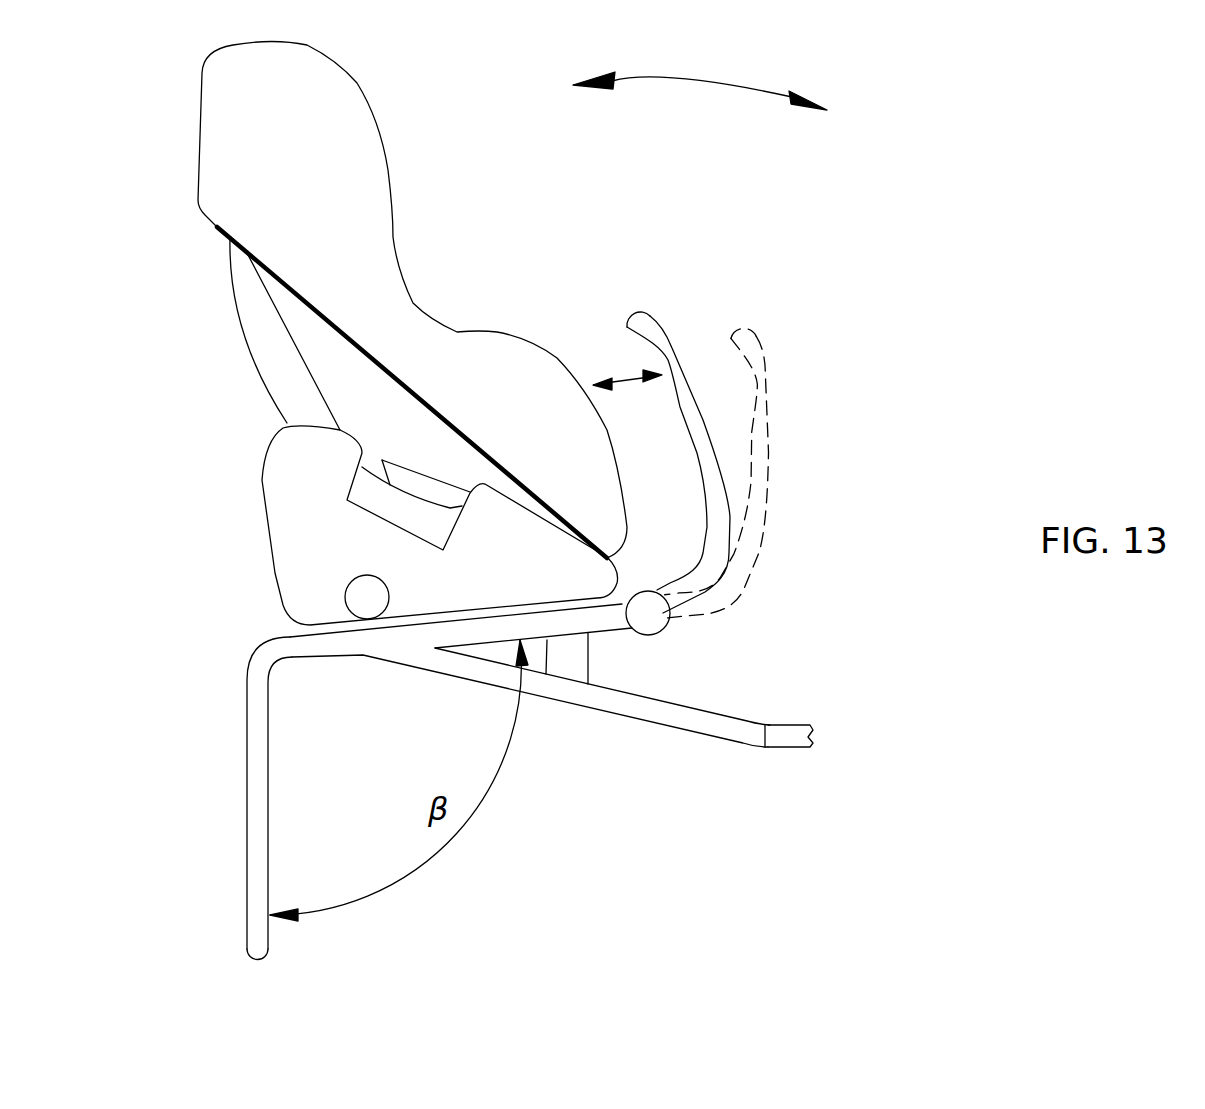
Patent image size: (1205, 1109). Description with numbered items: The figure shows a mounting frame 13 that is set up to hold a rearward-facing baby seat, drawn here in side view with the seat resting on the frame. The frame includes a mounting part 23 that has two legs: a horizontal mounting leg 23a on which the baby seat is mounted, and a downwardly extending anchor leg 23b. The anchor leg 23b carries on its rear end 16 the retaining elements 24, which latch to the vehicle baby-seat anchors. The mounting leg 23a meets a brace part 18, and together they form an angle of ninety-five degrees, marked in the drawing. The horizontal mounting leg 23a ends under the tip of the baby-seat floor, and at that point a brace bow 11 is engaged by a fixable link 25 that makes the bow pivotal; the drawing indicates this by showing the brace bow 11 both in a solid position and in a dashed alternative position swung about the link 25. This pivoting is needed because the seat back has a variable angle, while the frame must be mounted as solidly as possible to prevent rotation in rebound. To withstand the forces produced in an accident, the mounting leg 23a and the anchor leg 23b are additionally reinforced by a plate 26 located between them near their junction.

The brace bow 11 is at (658, 338).
The mounting frame 13 is at (515, 779).
The rear end 16 is at (807, 725).
The brace part 18 is at (260, 782).
The mounting part 23 is at (530, 696).
The mounting leg 23a is at (605, 618).
The anchor leg 23b is at (660, 710).
The retaining elements 24 is at (787, 733).
The fixable link 25 is at (668, 618).
The plate 26 is at (573, 655).